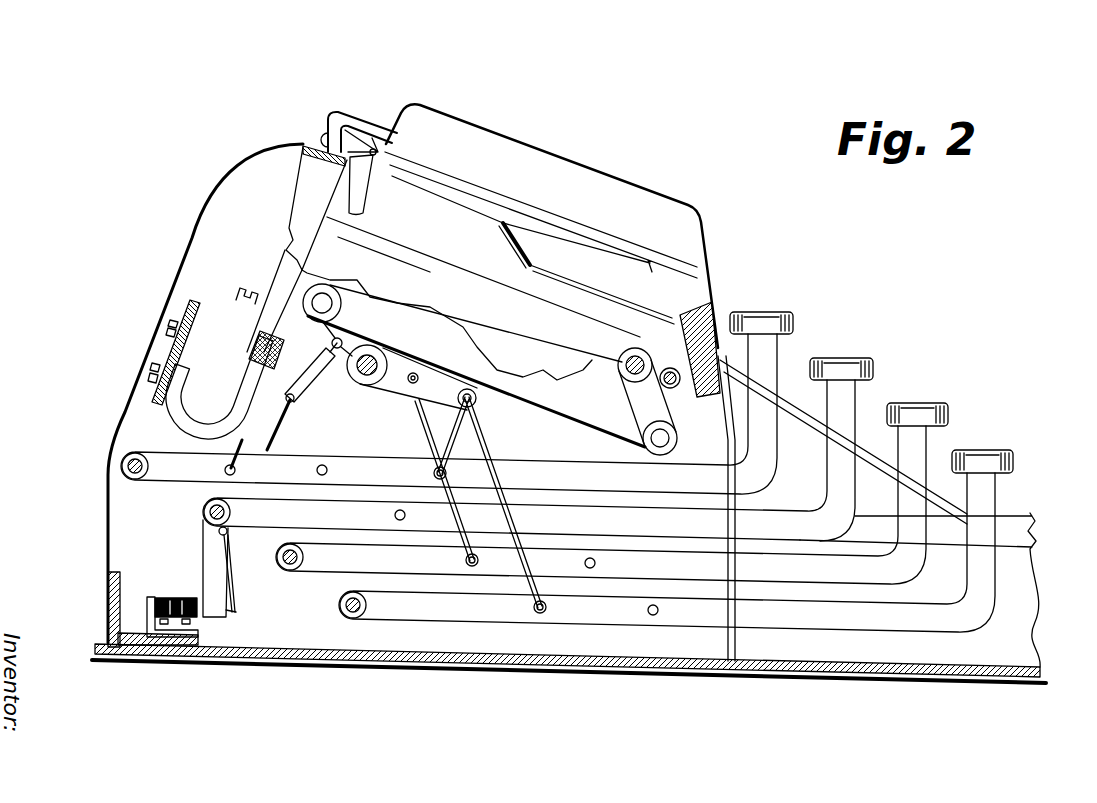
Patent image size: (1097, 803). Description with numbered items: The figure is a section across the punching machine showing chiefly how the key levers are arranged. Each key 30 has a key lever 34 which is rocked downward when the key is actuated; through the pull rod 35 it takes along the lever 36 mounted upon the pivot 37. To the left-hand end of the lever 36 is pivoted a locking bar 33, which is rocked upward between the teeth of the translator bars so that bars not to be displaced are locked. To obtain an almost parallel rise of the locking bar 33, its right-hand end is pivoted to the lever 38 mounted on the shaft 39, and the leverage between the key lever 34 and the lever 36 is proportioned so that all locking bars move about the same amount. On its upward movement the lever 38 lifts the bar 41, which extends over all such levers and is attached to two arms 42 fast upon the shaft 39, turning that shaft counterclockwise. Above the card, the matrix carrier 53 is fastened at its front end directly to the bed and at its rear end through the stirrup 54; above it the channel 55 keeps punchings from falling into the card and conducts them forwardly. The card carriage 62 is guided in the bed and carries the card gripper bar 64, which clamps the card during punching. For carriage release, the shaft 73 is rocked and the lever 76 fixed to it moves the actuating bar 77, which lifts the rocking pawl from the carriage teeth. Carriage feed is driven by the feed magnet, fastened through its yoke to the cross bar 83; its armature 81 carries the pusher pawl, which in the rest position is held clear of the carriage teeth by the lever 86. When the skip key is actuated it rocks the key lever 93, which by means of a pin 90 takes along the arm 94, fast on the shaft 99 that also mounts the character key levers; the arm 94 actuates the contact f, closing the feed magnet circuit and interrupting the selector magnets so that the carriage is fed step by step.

The key 30 is at (838, 363).
The locking bar 33 is at (557, 370).
The key lever 34 is at (980, 492).
The pull rod 35 is at (437, 443).
The lever 36 is at (397, 380).
The pivot 37 is at (360, 372).
The lever 38 is at (658, 407).
The shaft 39 is at (636, 348).
The bar 41 is at (675, 370).
The arm 42 is at (703, 300).
The matrix carrier 53 is at (452, 172).
The stirrup 54 is at (367, 122).
The channel 55 is at (517, 178).
The card carriage 62 is at (302, 147).
The card gripper bar 64 is at (338, 127).
The shaft 73 is at (122, 467).
The lever 76 is at (178, 474).
The actuating bar 77 is at (232, 448).
The armature 81 is at (213, 327).
The cross bar 83 is at (160, 403).
The lever 86 is at (280, 268).
The pin 90 is at (230, 613).
The key lever 93 is at (1020, 523).
The arm 94 is at (213, 550).
The shaft 99 is at (227, 542).
The contact f is at (180, 613).